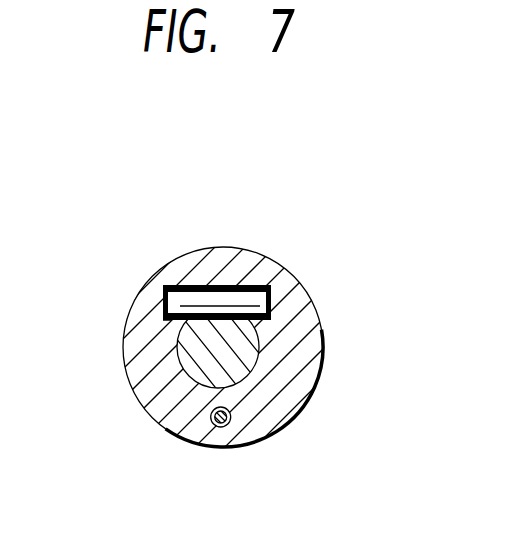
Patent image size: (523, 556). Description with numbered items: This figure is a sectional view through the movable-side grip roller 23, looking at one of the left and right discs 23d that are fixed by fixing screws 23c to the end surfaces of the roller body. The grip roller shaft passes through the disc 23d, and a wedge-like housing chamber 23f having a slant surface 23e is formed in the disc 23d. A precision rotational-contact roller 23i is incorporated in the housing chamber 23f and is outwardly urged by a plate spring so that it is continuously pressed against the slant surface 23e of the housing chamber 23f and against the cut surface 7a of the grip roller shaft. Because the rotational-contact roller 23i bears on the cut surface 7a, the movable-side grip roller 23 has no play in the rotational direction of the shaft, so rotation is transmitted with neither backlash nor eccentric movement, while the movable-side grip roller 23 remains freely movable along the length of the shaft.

The movable-side grip roller 23 is at (313, 283).
The fixing screw 23c is at (223, 427).
The disc 23d is at (274, 384).
The slant surface 23e is at (222, 284).
The housing chamber 23f is at (166, 321).
The precision rotational-contact roller 23i is at (203, 307).
The cut surface 7a is at (180, 346).